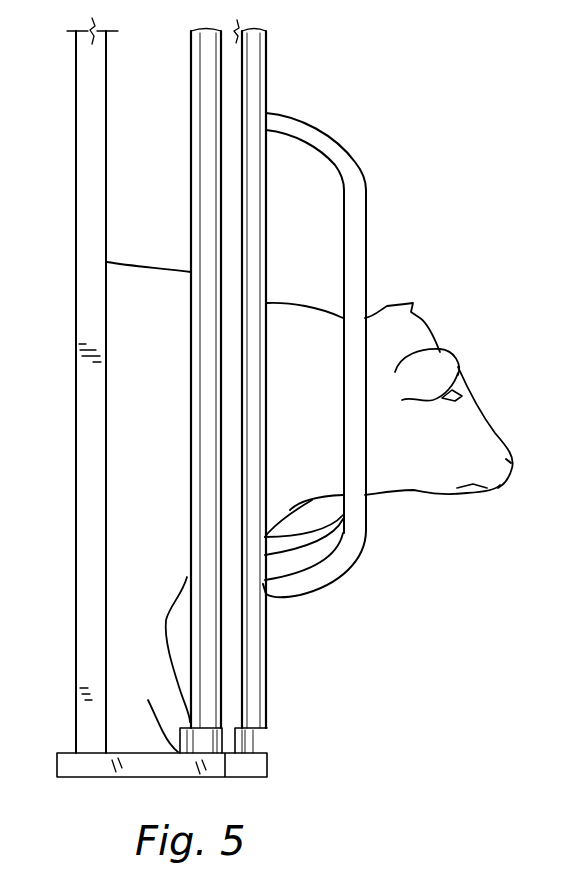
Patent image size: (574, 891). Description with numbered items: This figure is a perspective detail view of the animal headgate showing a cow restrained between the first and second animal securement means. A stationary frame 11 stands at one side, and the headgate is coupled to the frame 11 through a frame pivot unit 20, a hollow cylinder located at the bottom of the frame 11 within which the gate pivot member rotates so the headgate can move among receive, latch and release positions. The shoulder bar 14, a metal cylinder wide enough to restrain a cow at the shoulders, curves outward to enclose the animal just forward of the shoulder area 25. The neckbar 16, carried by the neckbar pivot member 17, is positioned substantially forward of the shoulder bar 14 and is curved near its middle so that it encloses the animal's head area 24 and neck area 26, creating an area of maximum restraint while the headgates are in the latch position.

The stationary frame 11 is at (85, 595).
The shoulder bar 14 is at (191, 63).
The neckbar 16 is at (356, 219).
The neckbar pivot member 17 is at (264, 60).
The frame pivot unit 20 is at (255, 742).
The head area 24 is at (408, 340).
The shoulder area 25 is at (143, 272).
The neck area 26 is at (306, 318).